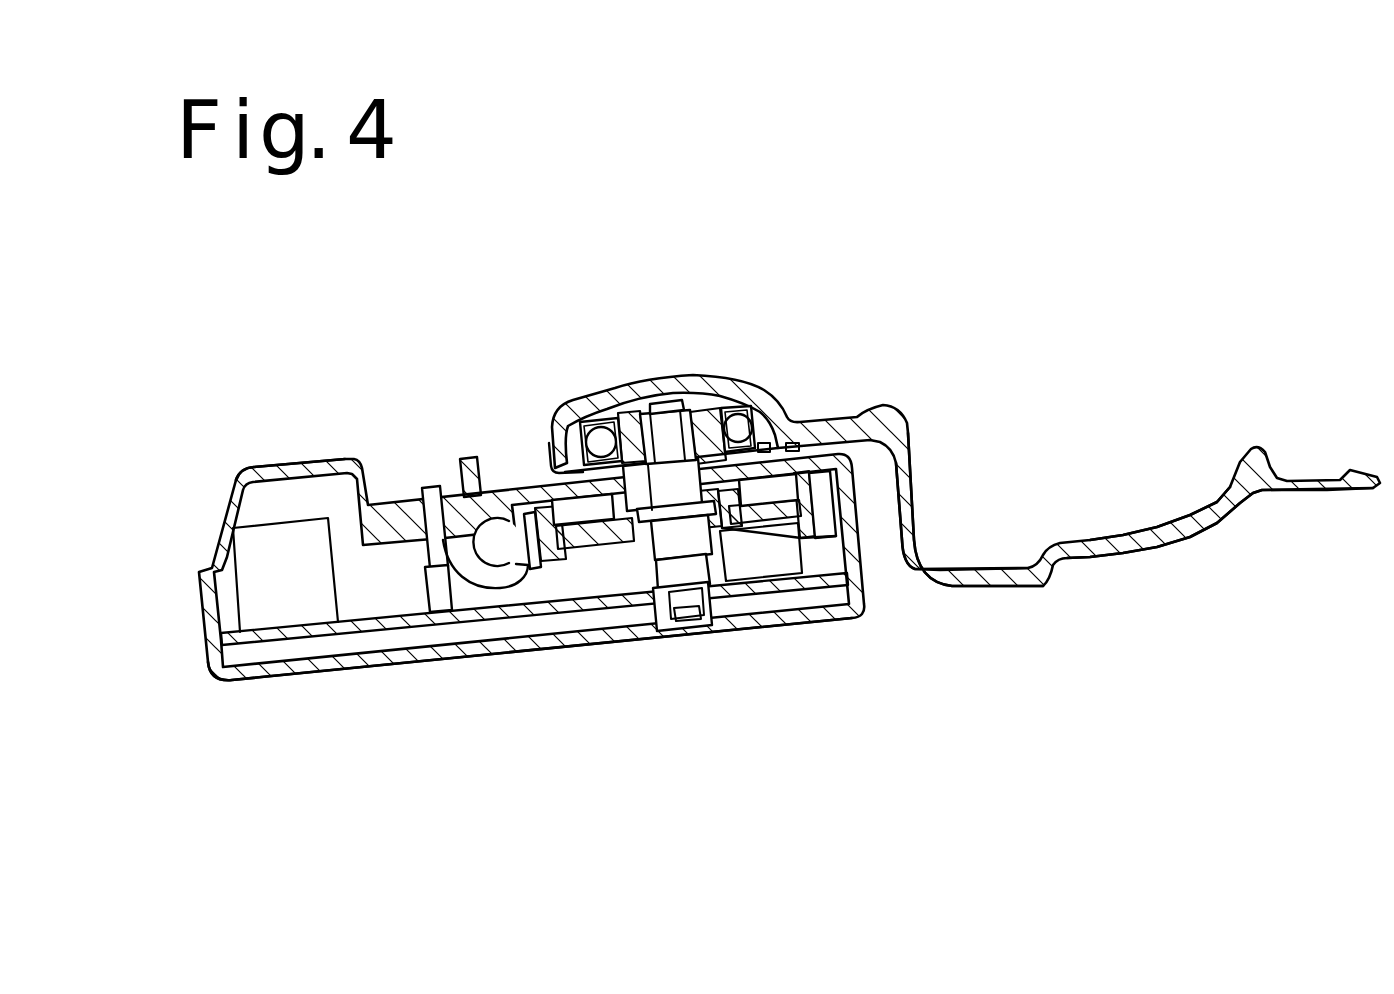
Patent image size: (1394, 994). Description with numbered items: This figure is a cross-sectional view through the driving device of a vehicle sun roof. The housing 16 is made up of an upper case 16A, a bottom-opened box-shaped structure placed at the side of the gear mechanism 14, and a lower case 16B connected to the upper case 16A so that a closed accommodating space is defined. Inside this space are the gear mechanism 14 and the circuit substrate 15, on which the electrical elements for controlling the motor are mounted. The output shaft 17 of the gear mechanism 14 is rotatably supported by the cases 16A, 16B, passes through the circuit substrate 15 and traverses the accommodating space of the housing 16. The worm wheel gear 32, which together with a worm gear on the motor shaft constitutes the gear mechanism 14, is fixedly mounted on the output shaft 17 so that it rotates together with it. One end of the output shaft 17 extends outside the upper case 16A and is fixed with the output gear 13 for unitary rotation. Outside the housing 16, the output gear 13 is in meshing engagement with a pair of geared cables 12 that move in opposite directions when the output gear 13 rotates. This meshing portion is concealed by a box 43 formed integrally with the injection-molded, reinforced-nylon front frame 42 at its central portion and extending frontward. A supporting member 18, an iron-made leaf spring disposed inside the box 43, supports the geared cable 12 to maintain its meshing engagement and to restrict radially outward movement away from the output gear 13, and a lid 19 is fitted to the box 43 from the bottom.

The geared cable 12 is at (597, 427).
The output gear 13 is at (630, 437).
The gear mechanism 14 is at (588, 550).
The circuit substrate 15 is at (388, 623).
The housing 16 is at (190, 610).
The upper case 16A is at (269, 462).
The lower case 16B is at (222, 682).
The output shaft 17 is at (710, 565).
The supporting member 18 is at (757, 437).
The lid 19 is at (552, 458).
The worm wheel gear 32 is at (795, 548).
The front frame 42 is at (1108, 560).
The box 43 is at (663, 390).